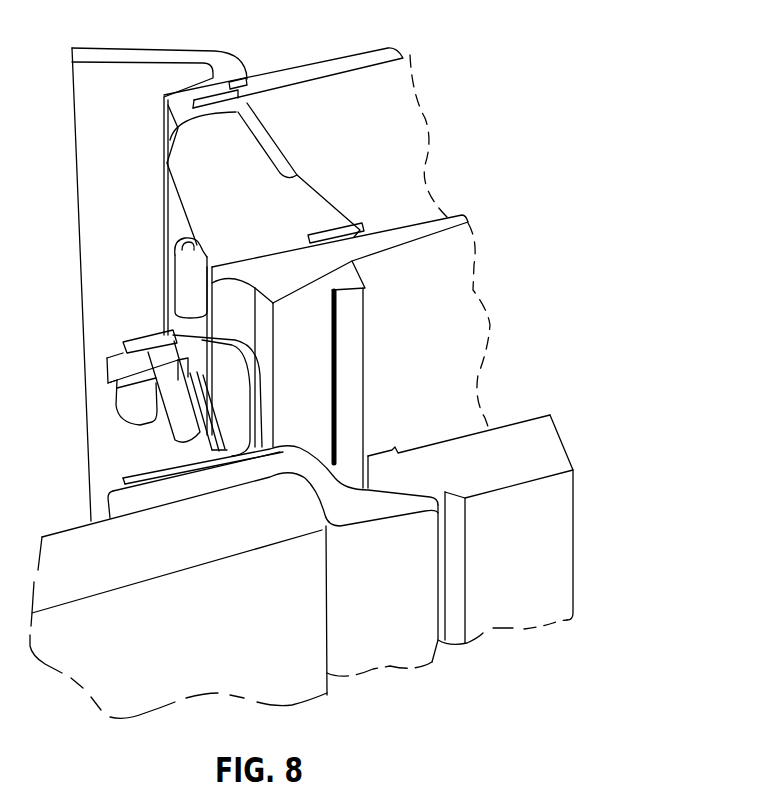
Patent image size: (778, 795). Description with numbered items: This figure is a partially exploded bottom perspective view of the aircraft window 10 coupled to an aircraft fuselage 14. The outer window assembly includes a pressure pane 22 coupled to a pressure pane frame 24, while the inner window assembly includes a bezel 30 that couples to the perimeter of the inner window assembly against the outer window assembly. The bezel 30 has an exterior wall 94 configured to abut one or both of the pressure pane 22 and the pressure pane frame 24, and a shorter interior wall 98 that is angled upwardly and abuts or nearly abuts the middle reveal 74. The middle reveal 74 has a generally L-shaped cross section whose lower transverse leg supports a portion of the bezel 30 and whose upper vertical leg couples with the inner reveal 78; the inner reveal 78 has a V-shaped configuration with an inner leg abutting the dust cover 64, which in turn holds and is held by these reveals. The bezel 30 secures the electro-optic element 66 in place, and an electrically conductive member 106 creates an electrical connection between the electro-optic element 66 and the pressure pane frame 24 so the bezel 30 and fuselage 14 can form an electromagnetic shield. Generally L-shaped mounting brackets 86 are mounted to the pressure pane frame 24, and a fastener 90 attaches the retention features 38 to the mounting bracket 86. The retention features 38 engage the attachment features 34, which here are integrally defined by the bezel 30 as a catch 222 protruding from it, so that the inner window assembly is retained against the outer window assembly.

The aircraft window 10 is at (597, 57).
The aircraft fuselage 14 is at (125, 683).
The pressure pane 22 is at (530, 593).
The pressure pane frame 24 is at (402, 630).
The bezel 30 is at (187, 158).
The attachment features 34 is at (168, 253).
The retention features 38 is at (274, 381).
The dust cover 64 is at (403, 127).
The electro-optic element 66 is at (453, 296).
The middle reveal 74 is at (278, 137).
The inner reveal 78 is at (155, 83).
The mounting bracket 86 is at (127, 482).
The fastener 90 is at (138, 333).
The exterior wall 94 is at (353, 338).
The interior wall 98 is at (332, 205).
The electrically conductive member 106 is at (337, 220).
The catch 222 is at (165, 218).